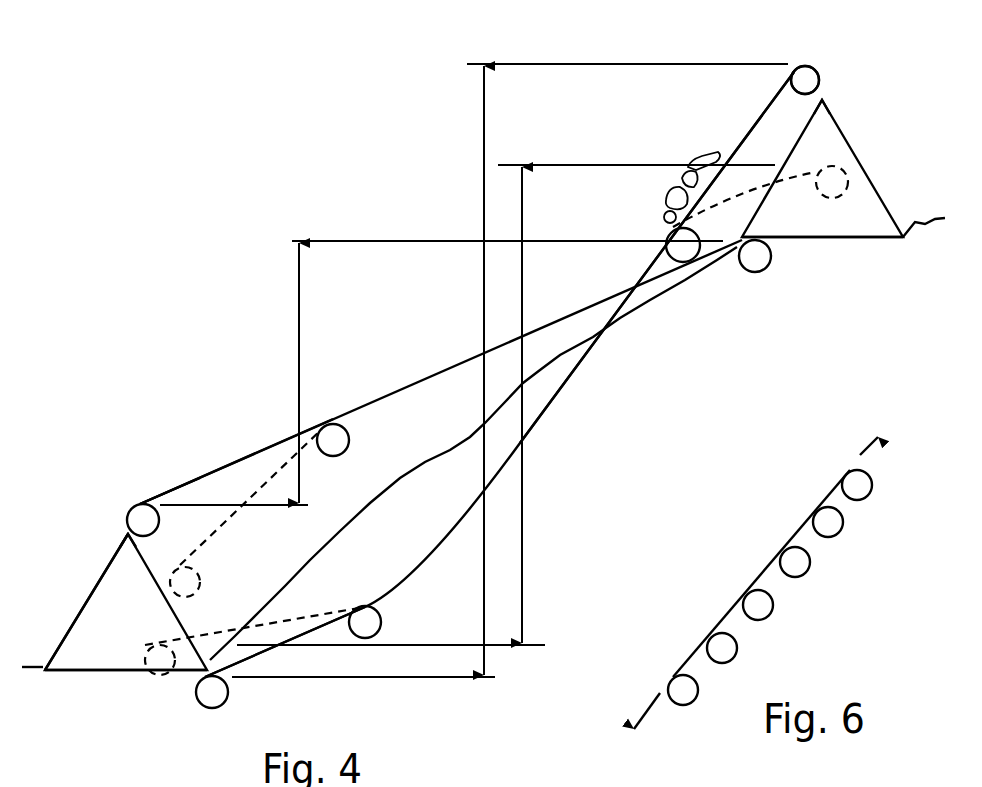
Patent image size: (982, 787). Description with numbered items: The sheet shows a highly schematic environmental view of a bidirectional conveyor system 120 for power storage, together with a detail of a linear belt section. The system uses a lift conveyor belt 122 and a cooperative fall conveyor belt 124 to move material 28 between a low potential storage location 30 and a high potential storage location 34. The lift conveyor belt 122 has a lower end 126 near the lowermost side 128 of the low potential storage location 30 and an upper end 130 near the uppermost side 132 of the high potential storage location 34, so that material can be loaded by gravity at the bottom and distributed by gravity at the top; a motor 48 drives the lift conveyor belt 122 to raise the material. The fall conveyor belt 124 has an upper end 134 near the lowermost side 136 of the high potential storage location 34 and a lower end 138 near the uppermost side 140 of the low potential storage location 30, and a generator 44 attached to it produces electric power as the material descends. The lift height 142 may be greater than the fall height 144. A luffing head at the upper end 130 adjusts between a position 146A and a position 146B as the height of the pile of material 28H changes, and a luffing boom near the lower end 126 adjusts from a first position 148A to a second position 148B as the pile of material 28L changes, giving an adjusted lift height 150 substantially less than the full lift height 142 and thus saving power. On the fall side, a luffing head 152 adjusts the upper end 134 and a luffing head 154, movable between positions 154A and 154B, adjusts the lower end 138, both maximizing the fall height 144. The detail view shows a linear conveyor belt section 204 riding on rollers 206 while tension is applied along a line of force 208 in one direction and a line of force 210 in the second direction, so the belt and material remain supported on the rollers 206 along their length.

In FIG. 4, the material 28 is at (660, 194).
In FIG. 4, the material at the low potential storage location 28L is at (70, 637).
In FIG. 4, the material at the high potential storage location 28H is at (865, 198).
In FIG. 4, the low potential storage location 30 is at (68, 680).
In FIG. 4, the high potential storage location 34 is at (882, 224).
In FIG. 4, the generator 44 is at (756, 272).
In FIG. 4, the motor 48 is at (796, 69).
In FIG. 4, the bidirectional conveyor system 120 is at (240, 290).
In FIG. 4, the lift conveyor belt 122 is at (544, 414).
In FIG. 4, the fall conveyor belt 124 is at (243, 460).
In FIG. 4, the lower end of the lift conveyor belt 126 is at (218, 708).
In FIG. 4, the lowermost side of the low potential storage location 128 is at (110, 672).
In FIG. 4, the upper end of the lift conveyor belt 130 is at (811, 65).
In FIG. 4, the uppermost side of the high potential storage location 132 is at (830, 112).
In FIG. 4, the upper end of the fall conveyor belt 134 is at (717, 262).
In FIG. 4, the lowermost side of the high potential storage location 136 is at (838, 240).
In FIG. 4, the lower end of the fall conveyor belt 138 is at (140, 505).
In FIG. 4, the uppermost side of the low potential storage location 140 is at (110, 562).
In FIG. 4, the lift height 142 is at (484, 148).
In FIG. 4, the fall height 144 is at (302, 343).
In FIG. 4, the first position of the luffing head 146A is at (793, 175).
In FIG. 4, the second position of the luffing head 146B is at (736, 147).
In FIG. 4, the first position of the luffing boom 148A is at (255, 662).
In FIG. 4, the second position of the luffing boom 148B is at (263, 633).
In FIG. 4, the adjusted lift height 150 is at (524, 292).
In FIG. 4, the luffing head 152 is at (648, 300).
In FIG. 4, the luffing head 154 is at (172, 492).
In FIG. 4, the first position of the luffing head 154A is at (170, 489).
In FIG. 4, the second position of the luffing head 154B is at (207, 542).
In FIG. 6, the linear conveyor belt section 204 is at (802, 527).
In FIG. 6, the rollers 206 is at (865, 495).
In FIG. 6, the line of force in one direction 208 is at (860, 453).
In FIG. 6, the line of force in a second direction 210 is at (652, 697).